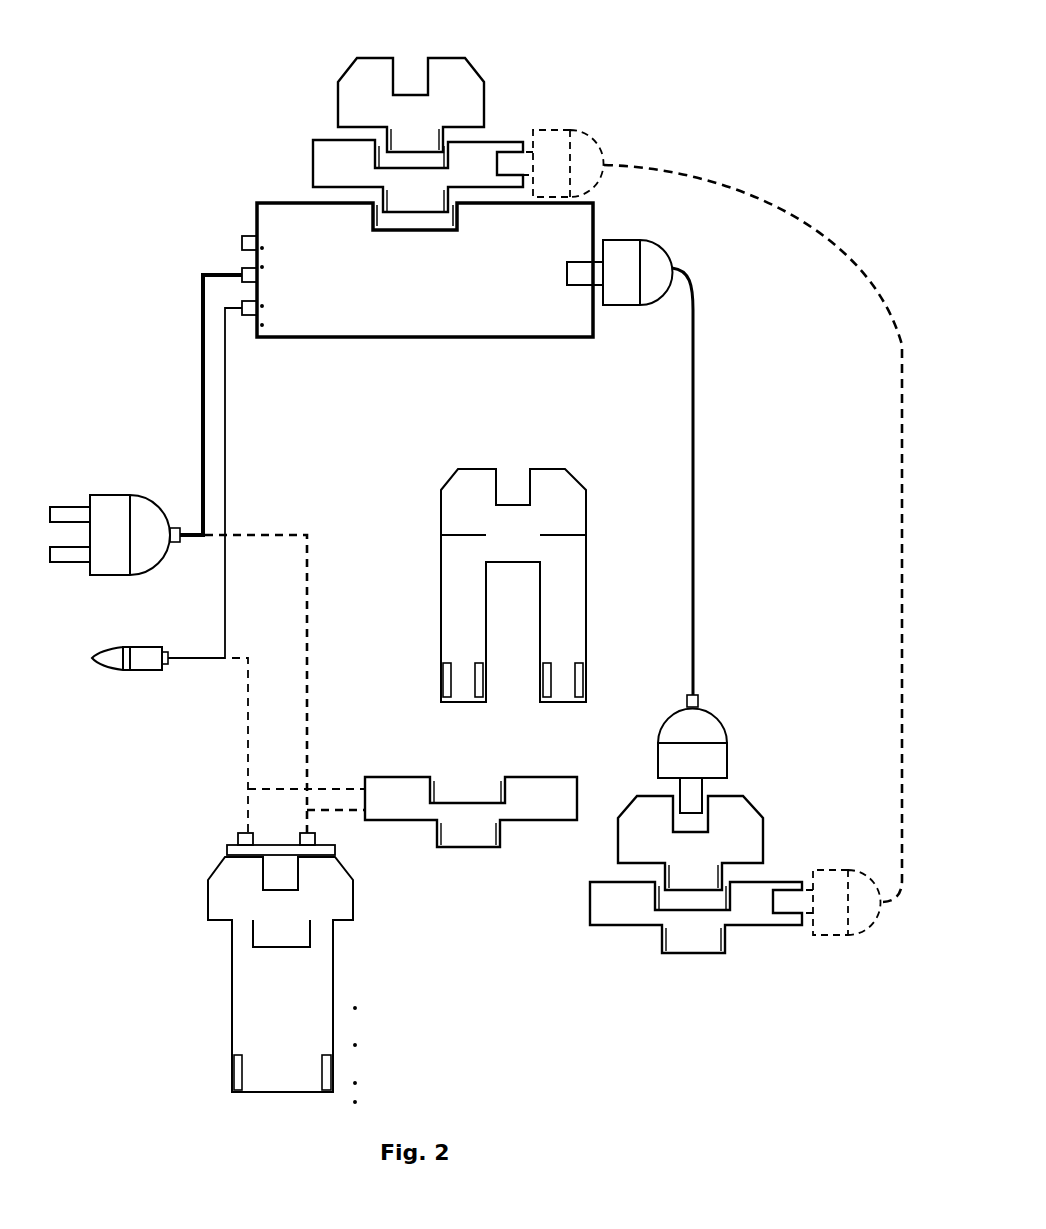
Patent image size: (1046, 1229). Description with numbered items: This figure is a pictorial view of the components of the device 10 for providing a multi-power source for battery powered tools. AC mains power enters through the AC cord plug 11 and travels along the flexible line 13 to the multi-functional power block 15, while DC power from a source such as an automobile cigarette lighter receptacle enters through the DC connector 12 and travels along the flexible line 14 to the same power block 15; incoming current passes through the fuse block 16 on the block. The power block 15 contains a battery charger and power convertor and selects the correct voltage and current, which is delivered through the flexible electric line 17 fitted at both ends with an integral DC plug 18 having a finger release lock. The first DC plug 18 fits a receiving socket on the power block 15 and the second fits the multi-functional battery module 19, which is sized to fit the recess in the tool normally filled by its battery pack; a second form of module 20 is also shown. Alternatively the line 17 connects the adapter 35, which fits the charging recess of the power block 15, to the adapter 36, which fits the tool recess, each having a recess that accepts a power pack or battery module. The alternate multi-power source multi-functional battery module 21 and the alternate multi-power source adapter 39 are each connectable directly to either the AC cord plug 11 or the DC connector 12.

The device 10 is at (733, 111).
The AC cord plug 11 is at (93, 492).
The DC connector 12 is at (145, 673).
The flexible line 13 is at (201, 400).
The flexible line 14 is at (227, 470).
The multi-functional power block 15 is at (600, 371).
The fuse block 16 is at (242, 243).
The flexible electric line 17 is at (694, 500).
The DC plug 18 is at (558, 130).
The multi-functional battery module 19 is at (486, 92).
The multi-functional battery module 20 is at (442, 560).
The alternate multi-power source multi-functional battery module 21 is at (232, 1058).
The adapter 35 is at (312, 167).
The adapter 36 is at (760, 928).
The alternate multi-power source adapter 39 is at (533, 820).